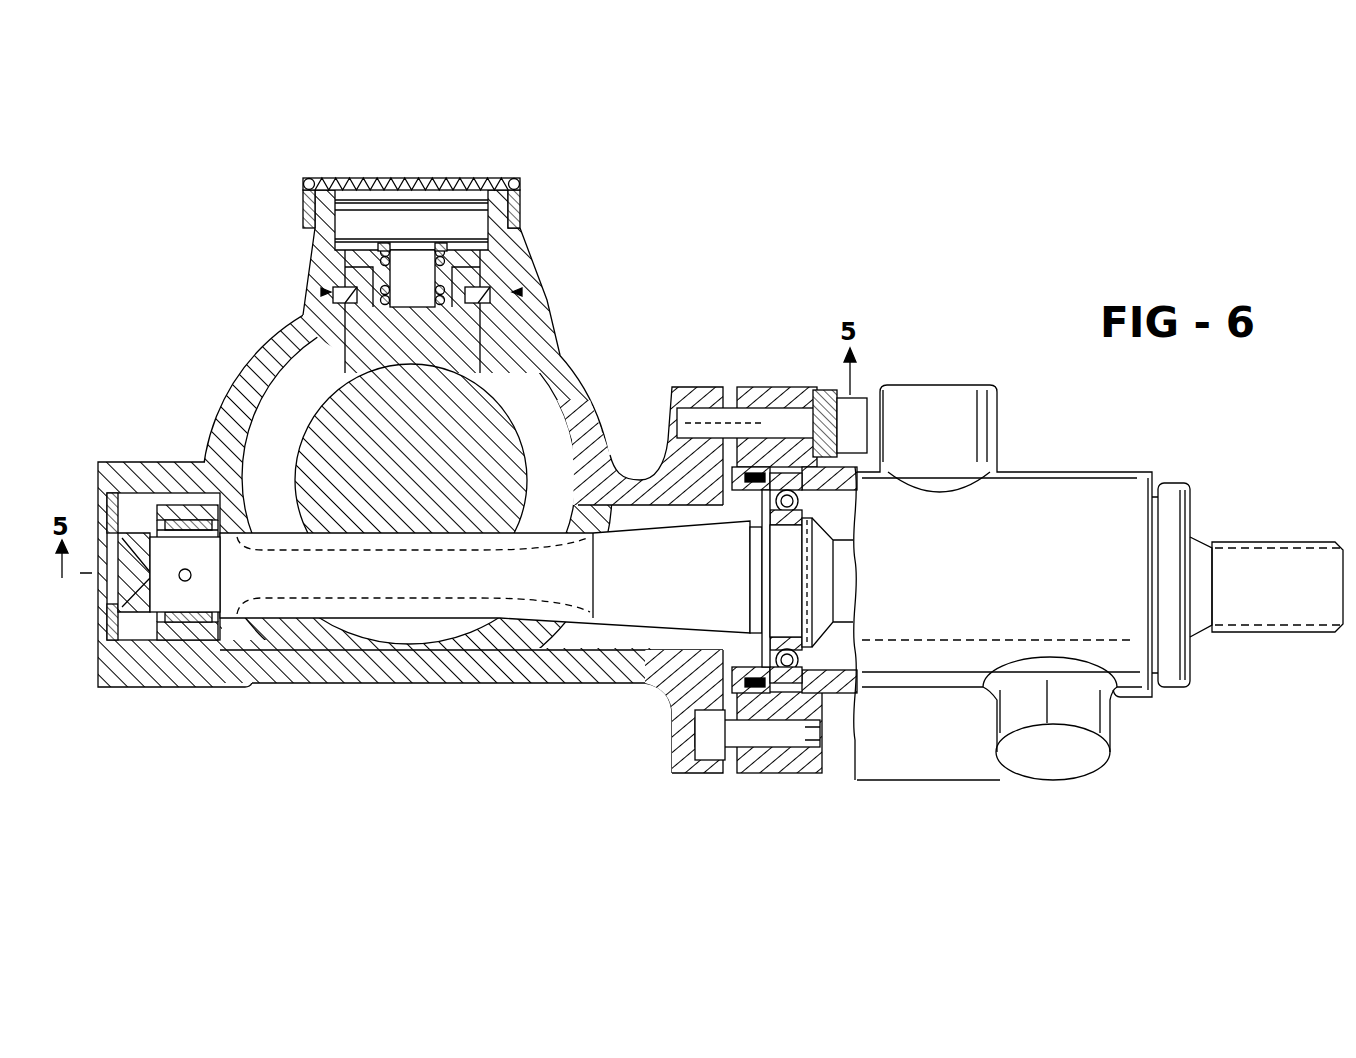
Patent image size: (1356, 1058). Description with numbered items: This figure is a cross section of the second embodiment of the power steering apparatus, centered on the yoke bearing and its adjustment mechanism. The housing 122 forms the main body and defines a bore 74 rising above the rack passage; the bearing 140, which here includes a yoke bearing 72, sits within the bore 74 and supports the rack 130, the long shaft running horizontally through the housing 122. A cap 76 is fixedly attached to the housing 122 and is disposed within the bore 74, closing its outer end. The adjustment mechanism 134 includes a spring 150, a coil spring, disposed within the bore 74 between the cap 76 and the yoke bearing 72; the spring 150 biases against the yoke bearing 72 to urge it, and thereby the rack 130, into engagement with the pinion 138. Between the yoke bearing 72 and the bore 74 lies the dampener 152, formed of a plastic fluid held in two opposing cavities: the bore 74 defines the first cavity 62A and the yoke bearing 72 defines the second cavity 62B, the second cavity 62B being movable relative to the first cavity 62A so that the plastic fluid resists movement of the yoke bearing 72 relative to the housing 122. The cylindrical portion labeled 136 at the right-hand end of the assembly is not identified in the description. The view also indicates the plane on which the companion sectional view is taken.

The adjustment mechanism 134 is at (365, 230).
The second cavity 62B is at (373, 238).
The spring 150 is at (408, 243).
The cap 76 is at (478, 188).
The bore 74 is at (523, 228).
The first cavity 62A is at (347, 287).
The dampener 152 is at (322, 292).
The bearing 140 is at (298, 365).
The yoke bearing 72 is at (351, 281).
The rack 130 is at (515, 423).
The housing 122 is at (588, 404).
The actuator body 136 is at (1067, 472).
The pinion 138 is at (240, 583).